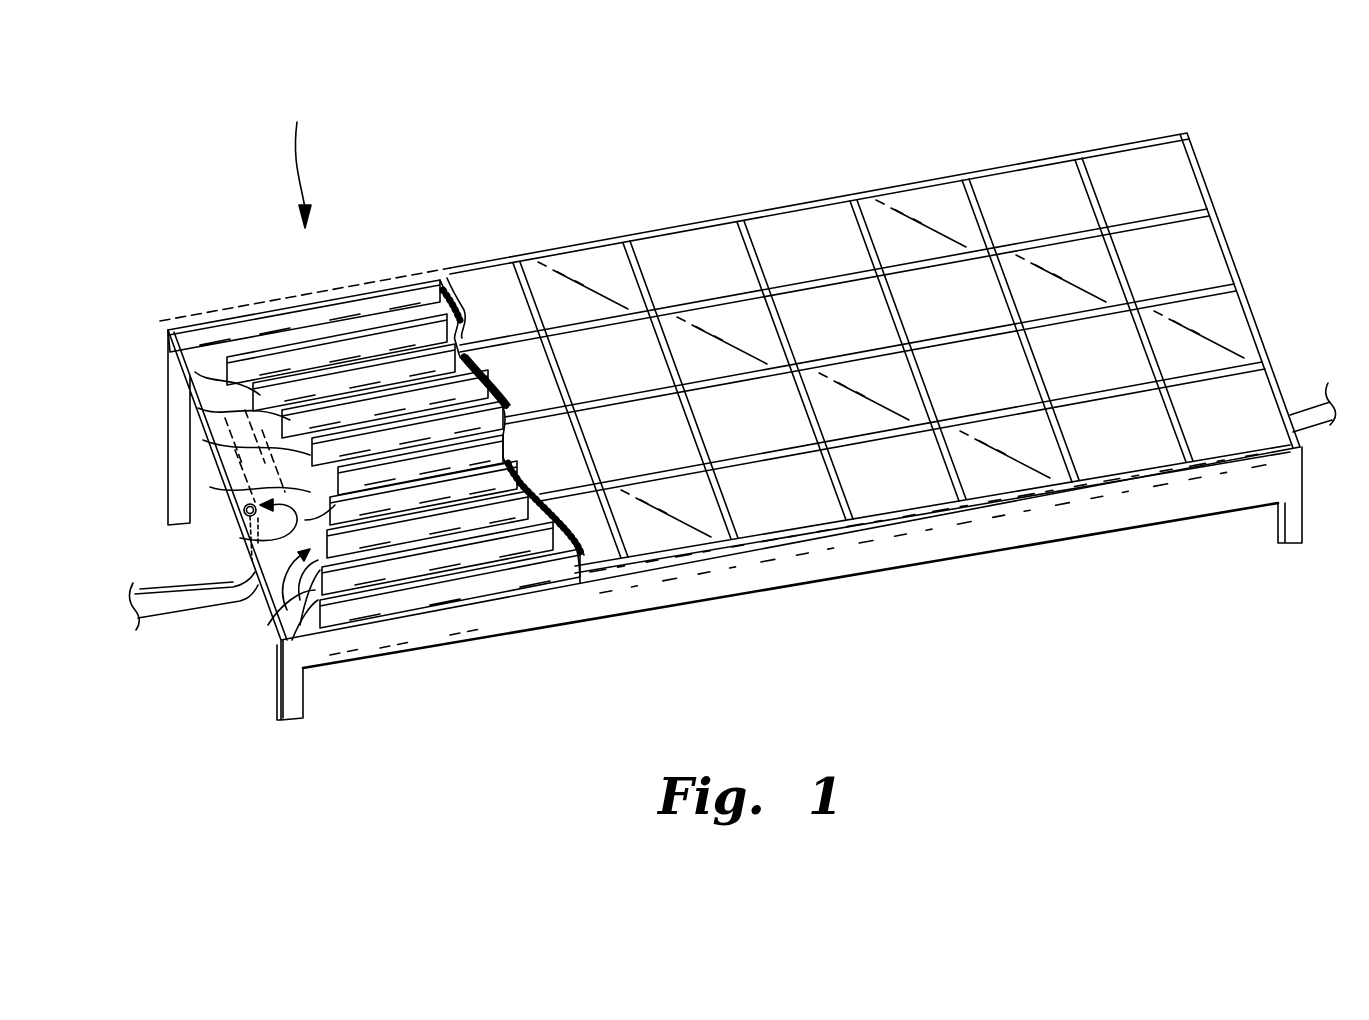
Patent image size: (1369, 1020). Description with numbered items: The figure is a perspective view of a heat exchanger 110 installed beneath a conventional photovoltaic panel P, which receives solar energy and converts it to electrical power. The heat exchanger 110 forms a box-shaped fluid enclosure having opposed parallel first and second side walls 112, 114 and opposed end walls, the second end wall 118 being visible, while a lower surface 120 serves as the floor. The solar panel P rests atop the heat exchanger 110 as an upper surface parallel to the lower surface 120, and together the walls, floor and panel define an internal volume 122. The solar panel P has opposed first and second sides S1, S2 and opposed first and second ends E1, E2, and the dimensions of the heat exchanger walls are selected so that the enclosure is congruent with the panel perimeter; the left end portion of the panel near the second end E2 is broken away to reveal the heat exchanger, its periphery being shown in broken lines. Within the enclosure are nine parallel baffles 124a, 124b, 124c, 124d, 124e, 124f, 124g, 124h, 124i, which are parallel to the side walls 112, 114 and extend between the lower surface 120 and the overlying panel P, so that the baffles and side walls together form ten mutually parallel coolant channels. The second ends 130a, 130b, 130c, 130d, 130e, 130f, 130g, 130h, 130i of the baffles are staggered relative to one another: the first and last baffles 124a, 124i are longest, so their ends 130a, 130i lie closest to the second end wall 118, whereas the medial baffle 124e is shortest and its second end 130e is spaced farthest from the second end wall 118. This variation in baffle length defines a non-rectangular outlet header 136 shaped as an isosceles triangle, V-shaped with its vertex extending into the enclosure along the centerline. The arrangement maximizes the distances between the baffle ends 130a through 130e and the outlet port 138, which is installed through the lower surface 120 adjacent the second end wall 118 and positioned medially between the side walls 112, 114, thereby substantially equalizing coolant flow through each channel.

The heat exchanger 110 is at (302, 161).
The first side wall 112 is at (376, 290).
The second side wall 114 is at (530, 612).
The second end wall 118 is at (240, 463).
The lower surface 120 is at (222, 362).
The internal volume 122 is at (322, 645).
The baffle 124a is at (410, 290).
The baffle 124b is at (428, 292).
The baffle 124c is at (480, 292).
The baffle 124d is at (497, 412).
The medial baffle 124e is at (520, 400).
The baffle 124f is at (560, 438).
The baffle 124g is at (527, 463).
The baffle 124h is at (600, 508).
The baffle 124i is at (555, 595).
The second end of baffle 130a is at (228, 384).
The second end of baffle 130b is at (258, 406).
The second end of baffle 130c is at (275, 432).
The second end of baffle 130d is at (235, 485).
The second end of baffle 130e is at (265, 522).
The second end of baffle 130f is at (307, 532).
The second end of baffle 130g is at (272, 640).
The second end of baffle 130h is at (320, 600).
The second end of baffle 130i is at (318, 565).
The outlet header 136 is at (262, 600).
The outlet port 138 is at (245, 517).
The photovoltaic panel P is at (825, 222).
The first side of solar panel S1 is at (683, 222).
The second side of solar panel S2 is at (875, 525).
The first end of solar panel E1 is at (1242, 262).
The second end of solar panel E2 is at (158, 322).